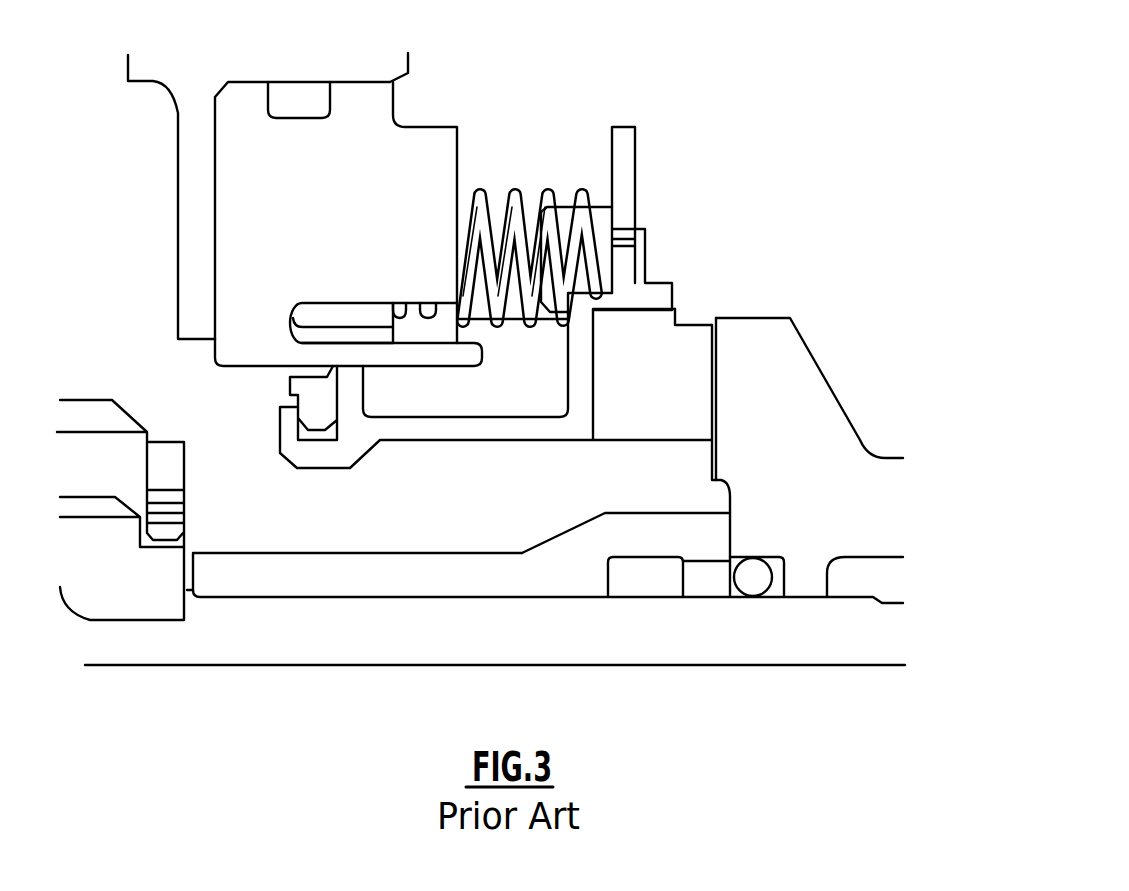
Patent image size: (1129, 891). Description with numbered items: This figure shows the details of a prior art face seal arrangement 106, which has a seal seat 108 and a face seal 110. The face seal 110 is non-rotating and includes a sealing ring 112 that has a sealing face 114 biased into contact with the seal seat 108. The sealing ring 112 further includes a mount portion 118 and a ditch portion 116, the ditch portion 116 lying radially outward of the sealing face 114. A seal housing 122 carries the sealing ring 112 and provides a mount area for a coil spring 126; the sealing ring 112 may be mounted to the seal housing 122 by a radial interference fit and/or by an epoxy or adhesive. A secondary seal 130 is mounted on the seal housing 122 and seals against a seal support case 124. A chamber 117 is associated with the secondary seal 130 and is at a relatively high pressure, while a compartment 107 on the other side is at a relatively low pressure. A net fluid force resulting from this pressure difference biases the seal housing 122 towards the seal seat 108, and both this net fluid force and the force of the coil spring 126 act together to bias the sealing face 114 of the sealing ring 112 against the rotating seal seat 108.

The face seal arrangement 106 is at (699, 88).
The compartment 107 is at (883, 275).
The seal seat 108 is at (807, 406).
The face seal 110 is at (625, 428).
The sealing ring 112 is at (672, 410).
The sealing face 114 is at (717, 375).
The ditch portion 116 is at (677, 318).
The chamber 117 is at (421, 521).
The mount portion 118 is at (666, 374).
The seal housing 122 is at (452, 425).
The seal support case 124 is at (252, 120).
The coil spring 126 is at (524, 197).
The secondary seal 130 is at (308, 399).